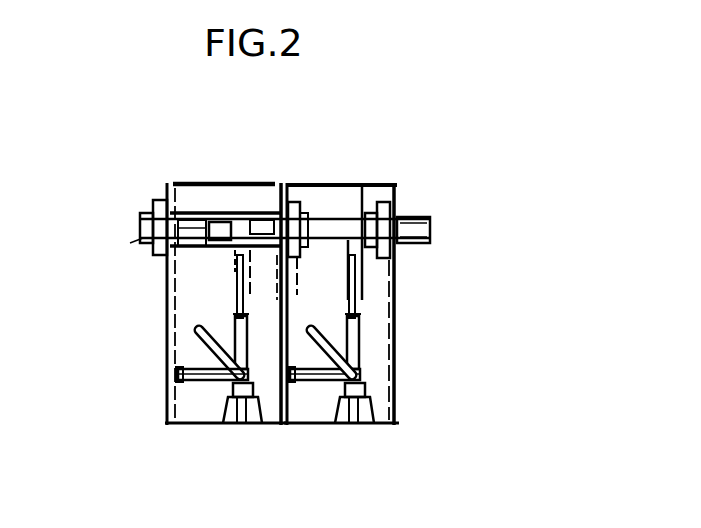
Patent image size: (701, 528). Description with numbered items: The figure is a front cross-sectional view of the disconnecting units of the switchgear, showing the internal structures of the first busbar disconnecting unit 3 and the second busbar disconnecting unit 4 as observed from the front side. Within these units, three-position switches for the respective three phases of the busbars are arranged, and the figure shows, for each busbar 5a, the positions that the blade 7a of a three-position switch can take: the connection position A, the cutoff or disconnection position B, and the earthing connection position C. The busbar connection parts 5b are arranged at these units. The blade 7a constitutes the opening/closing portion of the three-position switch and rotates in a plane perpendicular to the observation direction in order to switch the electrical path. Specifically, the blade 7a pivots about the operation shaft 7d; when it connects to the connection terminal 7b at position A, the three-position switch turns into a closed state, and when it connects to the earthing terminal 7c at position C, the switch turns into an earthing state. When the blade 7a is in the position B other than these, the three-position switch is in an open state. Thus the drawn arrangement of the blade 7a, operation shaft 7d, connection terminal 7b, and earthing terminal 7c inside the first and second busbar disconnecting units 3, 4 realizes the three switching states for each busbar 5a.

The first busbar disconnecting unit 3 is at (397, 183).
The second busbar disconnecting unit 4 is at (167, 325).
The busbar 5a is at (393, 198).
The busbar connection part 5b is at (140, 243).
The blade 7a is at (348, 330).
The connection terminal 7b is at (360, 287).
The earthing terminal 7c is at (303, 387).
The operation shaft 7d is at (345, 372).
The connection position A is at (233, 312).
The cutoff position B is at (210, 342).
The earthing connection position C is at (219, 395).